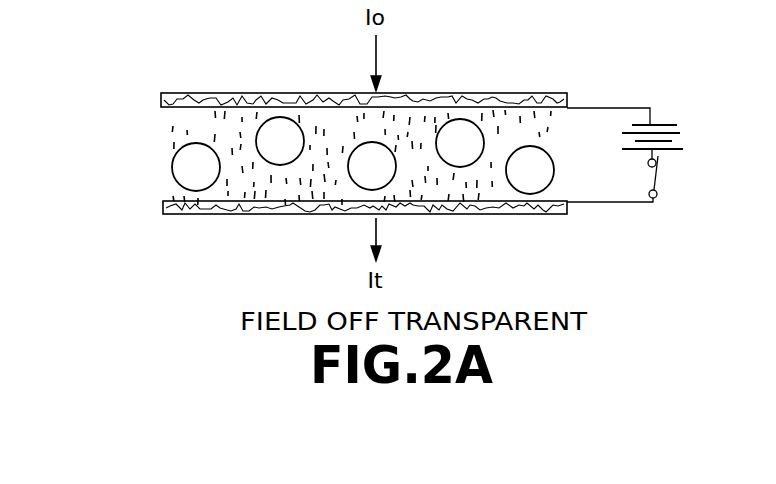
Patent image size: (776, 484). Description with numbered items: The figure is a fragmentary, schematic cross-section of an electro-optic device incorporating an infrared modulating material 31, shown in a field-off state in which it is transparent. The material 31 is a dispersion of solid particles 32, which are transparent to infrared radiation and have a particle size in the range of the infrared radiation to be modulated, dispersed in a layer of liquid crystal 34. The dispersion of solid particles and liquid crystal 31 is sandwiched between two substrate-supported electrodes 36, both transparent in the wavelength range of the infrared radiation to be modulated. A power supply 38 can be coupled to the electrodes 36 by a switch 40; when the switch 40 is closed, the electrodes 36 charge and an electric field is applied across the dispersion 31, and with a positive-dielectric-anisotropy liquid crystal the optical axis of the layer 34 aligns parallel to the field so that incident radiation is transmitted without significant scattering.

The infrared modulating material 31 is at (211, 136).
The solid particles 32 is at (530, 182).
The layer of liquid crystal 34 is at (392, 160).
The substrate-supported electrodes 36 is at (440, 94).
The power supply 38 is at (676, 124).
The switch 40 is at (660, 175).